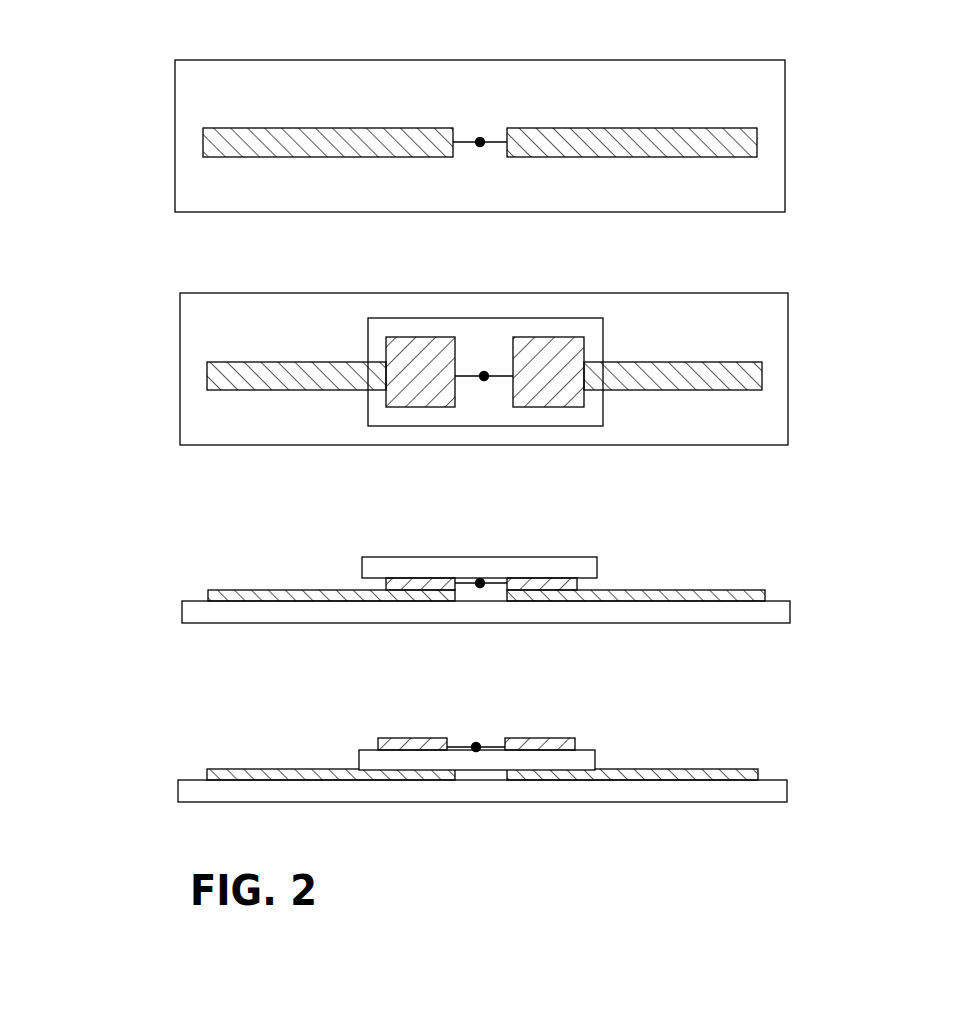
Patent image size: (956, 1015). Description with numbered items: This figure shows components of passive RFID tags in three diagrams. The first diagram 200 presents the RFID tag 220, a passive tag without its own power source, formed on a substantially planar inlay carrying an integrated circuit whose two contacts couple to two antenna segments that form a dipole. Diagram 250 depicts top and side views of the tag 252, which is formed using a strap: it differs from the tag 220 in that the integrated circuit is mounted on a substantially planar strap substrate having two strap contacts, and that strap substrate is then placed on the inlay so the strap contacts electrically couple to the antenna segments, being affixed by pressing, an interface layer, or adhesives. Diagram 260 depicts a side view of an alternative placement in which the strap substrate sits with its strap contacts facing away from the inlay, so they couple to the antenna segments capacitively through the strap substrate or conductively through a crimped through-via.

The sensor package assembly stage 200 is at (77, 50).
The RFID tag 220 is at (163, 130).
The diagram 250 is at (72, 305).
The tag 252 is at (171, 453).
The diagram 260 is at (72, 762).